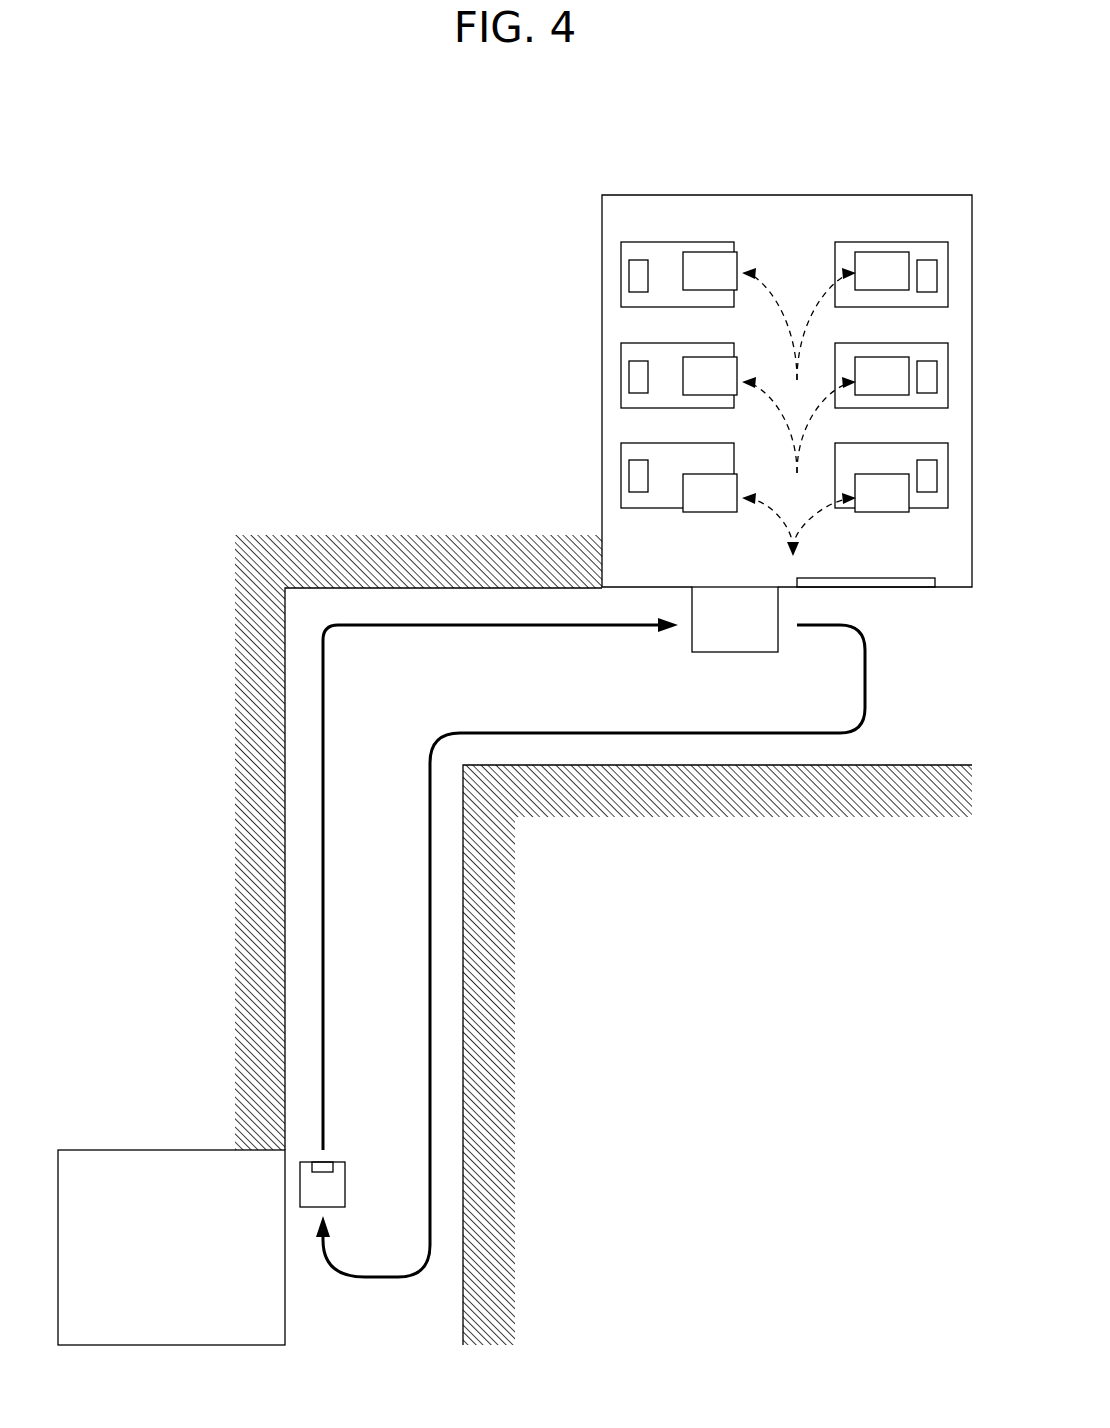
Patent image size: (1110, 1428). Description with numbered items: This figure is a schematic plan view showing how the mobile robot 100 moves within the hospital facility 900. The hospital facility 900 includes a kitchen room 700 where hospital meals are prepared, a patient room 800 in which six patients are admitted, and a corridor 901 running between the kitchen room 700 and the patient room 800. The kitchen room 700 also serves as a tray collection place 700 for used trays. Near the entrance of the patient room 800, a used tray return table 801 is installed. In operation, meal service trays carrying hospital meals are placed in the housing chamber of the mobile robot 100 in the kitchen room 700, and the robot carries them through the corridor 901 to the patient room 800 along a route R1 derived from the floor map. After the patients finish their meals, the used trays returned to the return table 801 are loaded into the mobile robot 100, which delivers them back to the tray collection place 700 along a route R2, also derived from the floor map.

The hospital facility 900 is at (358, 216).
The corridor 901 is at (402, 606).
The patient room 800 is at (697, 190).
The used tray return table 801 is at (713, 652).
The kitchen room 700 is at (151, 1140).
The mobile robot 100 is at (333, 1160).
The route R1 is at (478, 628).
The route R2 is at (515, 731).